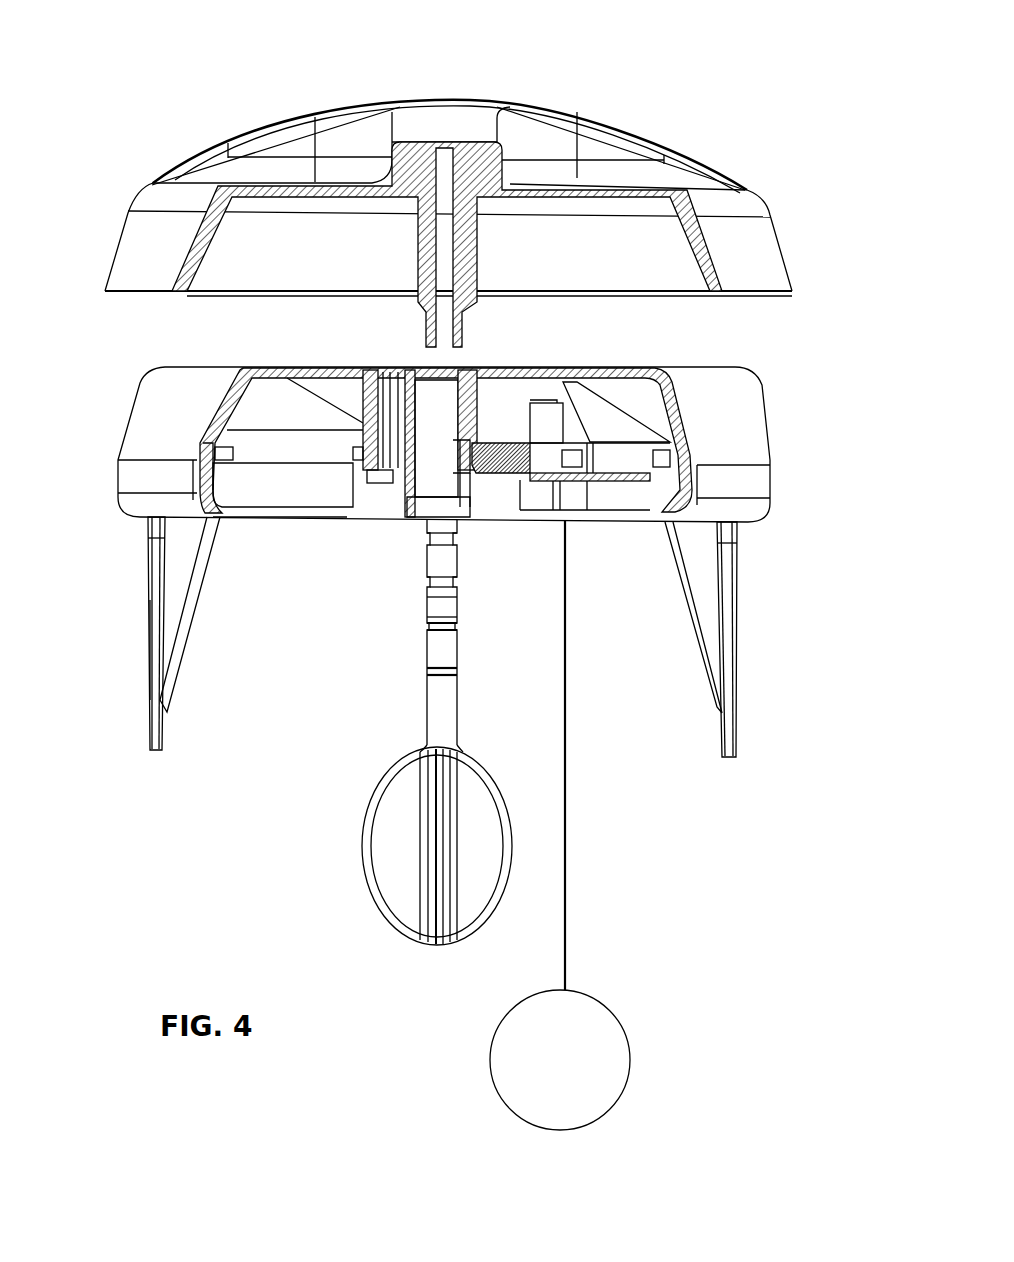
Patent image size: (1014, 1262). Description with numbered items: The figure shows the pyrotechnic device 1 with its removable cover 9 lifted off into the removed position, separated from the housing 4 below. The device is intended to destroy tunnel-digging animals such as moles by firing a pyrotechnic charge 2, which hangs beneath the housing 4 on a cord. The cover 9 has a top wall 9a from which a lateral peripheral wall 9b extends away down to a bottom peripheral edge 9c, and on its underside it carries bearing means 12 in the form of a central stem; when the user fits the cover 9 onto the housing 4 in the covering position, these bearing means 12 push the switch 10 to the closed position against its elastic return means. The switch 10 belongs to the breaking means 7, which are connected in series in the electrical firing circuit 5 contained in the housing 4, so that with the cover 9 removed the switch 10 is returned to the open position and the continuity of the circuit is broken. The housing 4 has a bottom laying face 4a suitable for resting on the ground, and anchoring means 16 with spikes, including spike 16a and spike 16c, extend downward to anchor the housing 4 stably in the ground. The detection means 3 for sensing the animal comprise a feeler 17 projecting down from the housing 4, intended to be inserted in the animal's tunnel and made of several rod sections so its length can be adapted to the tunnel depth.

The pyrotechnic device 1 is at (298, 88).
The removable cover 9 is at (604, 106).
The top wall 9a is at (432, 118).
The lateral peripheral wall 9b is at (132, 235).
The bottom peripheral edge 9c is at (105, 287).
The bearing means 12 is at (478, 279).
The switch 10 is at (466, 460).
The housing 4 is at (300, 520).
The bottom laying face 4a is at (238, 518).
The breaking means 7 is at (493, 480).
The electrical firing circuit 5 is at (598, 482).
The detection means 3 is at (410, 716).
The feeler 17 is at (427, 670).
The anchoring means 16 is at (180, 722).
The spike 16a is at (160, 676).
The spike 16c is at (710, 647).
The pyrotechnic charge 2 is at (560, 825).